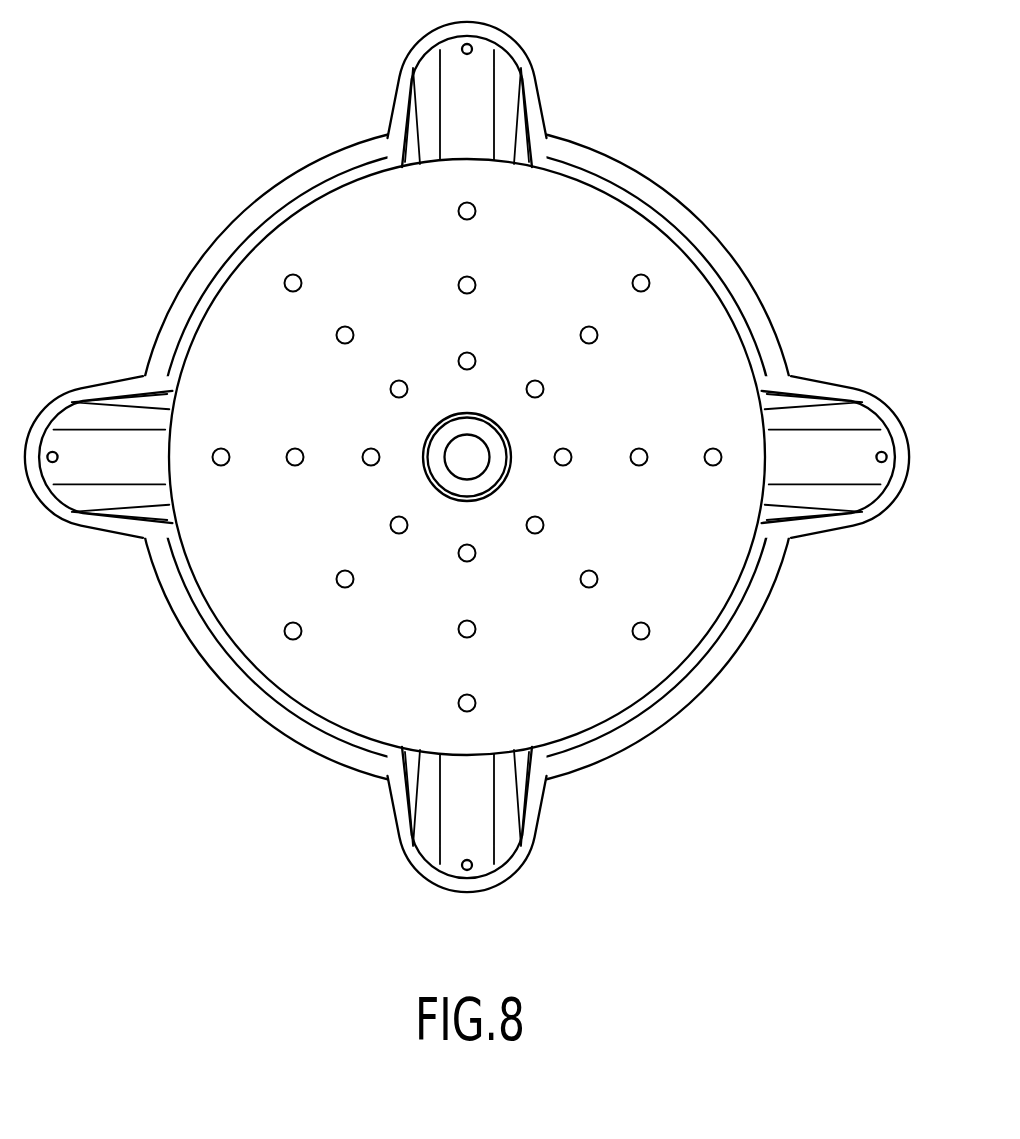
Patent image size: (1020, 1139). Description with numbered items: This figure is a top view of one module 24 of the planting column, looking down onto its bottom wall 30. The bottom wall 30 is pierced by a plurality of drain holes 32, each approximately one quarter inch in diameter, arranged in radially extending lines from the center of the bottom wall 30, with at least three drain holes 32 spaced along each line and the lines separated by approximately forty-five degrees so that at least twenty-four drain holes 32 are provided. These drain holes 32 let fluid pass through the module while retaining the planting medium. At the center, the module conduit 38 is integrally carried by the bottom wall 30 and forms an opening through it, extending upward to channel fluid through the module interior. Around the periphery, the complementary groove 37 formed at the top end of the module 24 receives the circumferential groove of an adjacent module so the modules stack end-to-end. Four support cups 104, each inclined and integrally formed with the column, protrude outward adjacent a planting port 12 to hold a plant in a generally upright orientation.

The planting port 12 is at (775, 445).
The module 24 is at (713, 241).
The bottom wall 30 is at (597, 228).
The drain holes 32 is at (543, 524).
The complementary groove 37 is at (687, 668).
The module conduit 38 is at (510, 443).
The support cup 104 is at (887, 510).